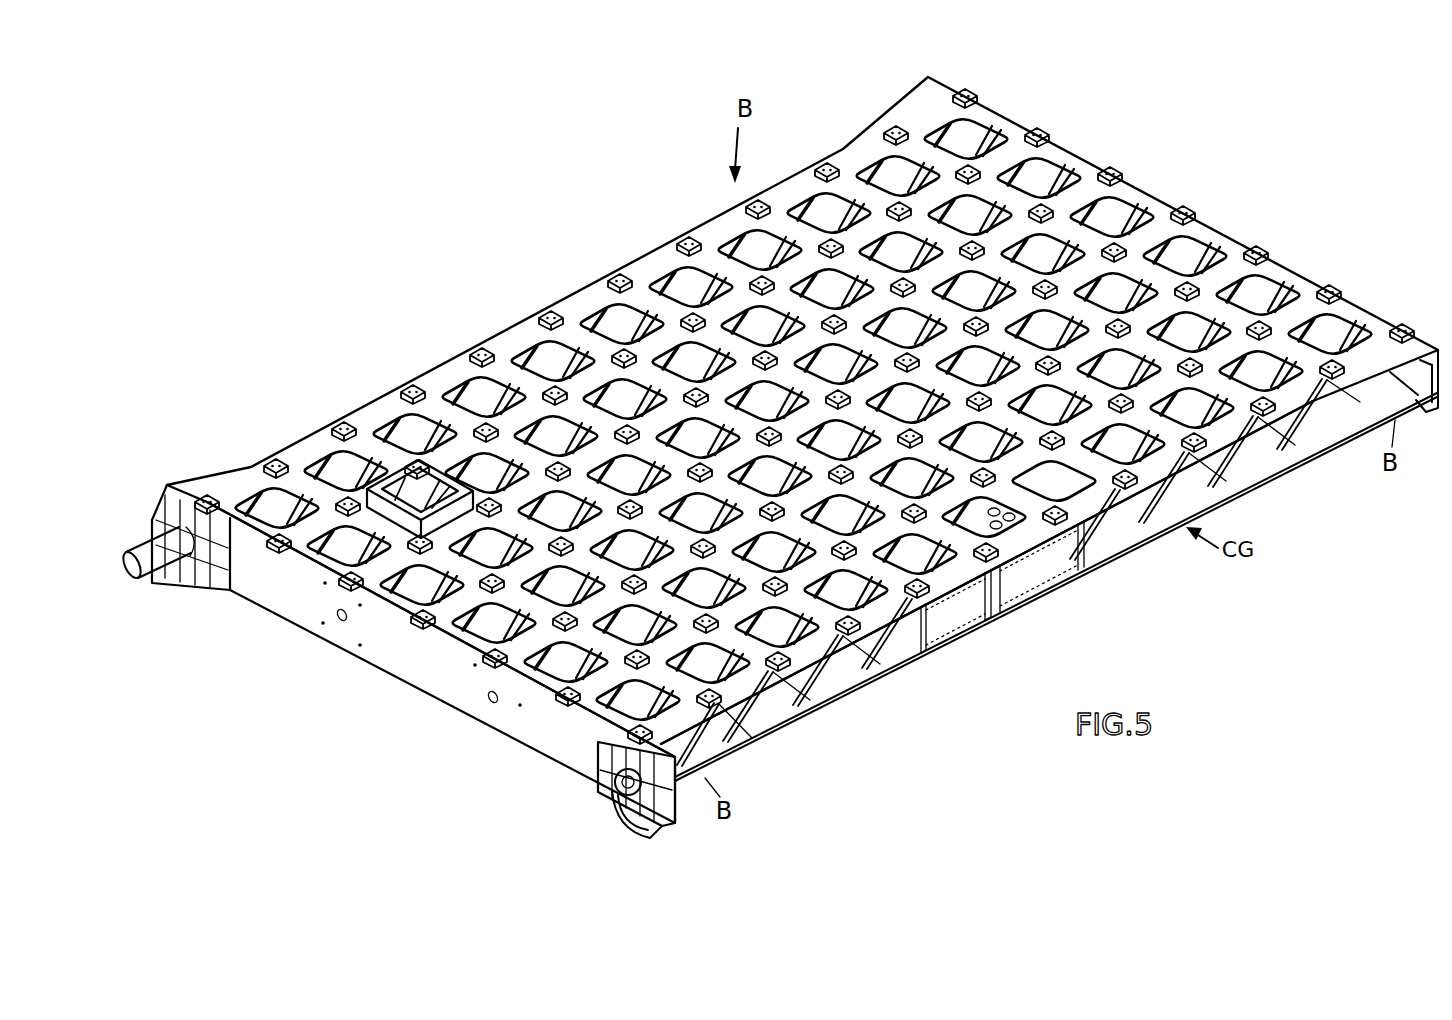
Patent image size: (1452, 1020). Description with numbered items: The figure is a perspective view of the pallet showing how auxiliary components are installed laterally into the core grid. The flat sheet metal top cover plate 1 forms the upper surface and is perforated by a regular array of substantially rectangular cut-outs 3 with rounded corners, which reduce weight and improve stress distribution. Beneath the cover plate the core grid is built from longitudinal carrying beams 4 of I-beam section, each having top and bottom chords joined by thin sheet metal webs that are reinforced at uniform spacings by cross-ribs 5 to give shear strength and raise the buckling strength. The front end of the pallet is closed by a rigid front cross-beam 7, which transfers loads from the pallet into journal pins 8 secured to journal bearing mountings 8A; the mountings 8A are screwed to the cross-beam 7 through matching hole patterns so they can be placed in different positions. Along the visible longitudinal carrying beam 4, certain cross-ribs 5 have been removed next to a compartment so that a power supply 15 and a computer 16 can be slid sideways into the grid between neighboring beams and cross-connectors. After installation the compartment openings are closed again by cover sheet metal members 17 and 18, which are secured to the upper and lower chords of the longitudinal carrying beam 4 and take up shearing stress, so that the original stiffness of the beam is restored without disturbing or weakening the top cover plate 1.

The top cover plate 1 is at (455, 374).
The cut-outs 3 is at (612, 318).
The longitudinal carrying beams 4 is at (845, 684).
The cross-ribs 5 is at (752, 735).
The front cross-beam 7 is at (298, 598).
The journal pins 8 is at (142, 558).
The journal bearing mountings 8A is at (620, 790).
The power supply 15 is at (1058, 482).
The computer 16 is at (957, 603).
The cover sheet metal member 17 is at (940, 567).
The cover sheet metal member 18 is at (1022, 568).